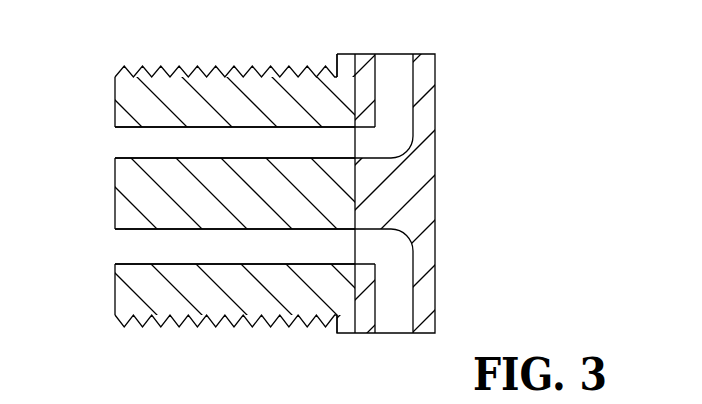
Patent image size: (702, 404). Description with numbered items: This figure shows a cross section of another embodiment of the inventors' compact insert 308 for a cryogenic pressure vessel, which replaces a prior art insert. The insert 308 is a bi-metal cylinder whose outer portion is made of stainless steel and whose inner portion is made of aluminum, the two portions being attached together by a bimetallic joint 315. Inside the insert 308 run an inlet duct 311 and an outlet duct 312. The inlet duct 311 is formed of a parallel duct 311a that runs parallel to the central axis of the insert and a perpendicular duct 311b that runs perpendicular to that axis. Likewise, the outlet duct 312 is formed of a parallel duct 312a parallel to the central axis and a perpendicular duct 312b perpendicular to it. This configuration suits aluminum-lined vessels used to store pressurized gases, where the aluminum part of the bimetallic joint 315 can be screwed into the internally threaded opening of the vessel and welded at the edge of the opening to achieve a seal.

The insert 308 is at (437, 189).
The inlet duct 311 is at (115, 145).
The parallel duct 311a is at (242, 143).
The perpendicular duct 311b is at (397, 102).
The outlet duct 312 is at (115, 247).
The parallel duct 312a is at (272, 253).
The perpendicular duct 312b is at (400, 305).
The bimetallic joint 315 is at (352, 85).